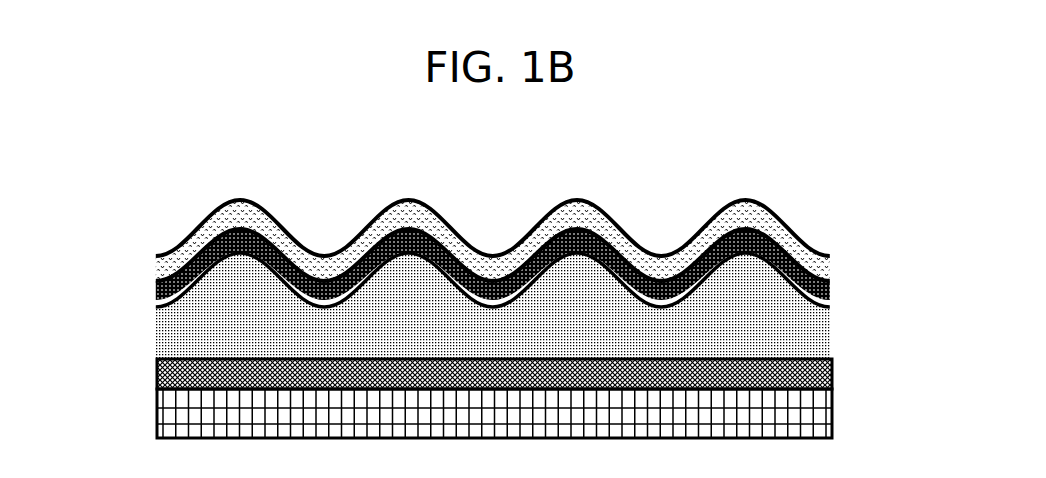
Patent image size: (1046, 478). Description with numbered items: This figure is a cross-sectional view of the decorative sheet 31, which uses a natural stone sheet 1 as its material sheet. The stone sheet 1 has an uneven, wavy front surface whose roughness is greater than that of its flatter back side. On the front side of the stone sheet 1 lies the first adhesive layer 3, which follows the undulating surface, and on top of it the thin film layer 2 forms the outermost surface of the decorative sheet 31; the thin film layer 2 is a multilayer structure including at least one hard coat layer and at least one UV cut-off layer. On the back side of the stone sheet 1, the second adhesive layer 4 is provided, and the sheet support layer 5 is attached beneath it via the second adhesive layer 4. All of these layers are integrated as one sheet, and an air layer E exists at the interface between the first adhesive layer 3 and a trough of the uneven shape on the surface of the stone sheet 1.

The decorative sheet 31 is at (147, 200).
The stone sheet 1 is at (800, 328).
The thin film layer 2 is at (775, 226).
The first adhesive layer 3 is at (818, 268).
The second adhesive layer 4 is at (822, 372).
The sheet support layer 5 is at (803, 416).
The air layer E is at (495, 306).